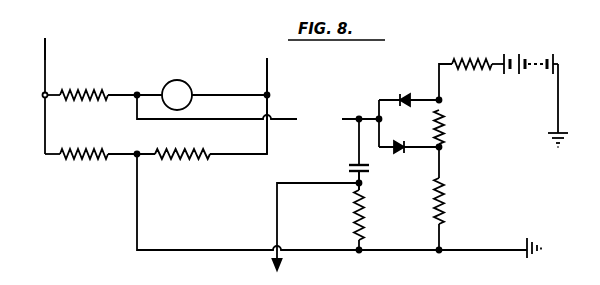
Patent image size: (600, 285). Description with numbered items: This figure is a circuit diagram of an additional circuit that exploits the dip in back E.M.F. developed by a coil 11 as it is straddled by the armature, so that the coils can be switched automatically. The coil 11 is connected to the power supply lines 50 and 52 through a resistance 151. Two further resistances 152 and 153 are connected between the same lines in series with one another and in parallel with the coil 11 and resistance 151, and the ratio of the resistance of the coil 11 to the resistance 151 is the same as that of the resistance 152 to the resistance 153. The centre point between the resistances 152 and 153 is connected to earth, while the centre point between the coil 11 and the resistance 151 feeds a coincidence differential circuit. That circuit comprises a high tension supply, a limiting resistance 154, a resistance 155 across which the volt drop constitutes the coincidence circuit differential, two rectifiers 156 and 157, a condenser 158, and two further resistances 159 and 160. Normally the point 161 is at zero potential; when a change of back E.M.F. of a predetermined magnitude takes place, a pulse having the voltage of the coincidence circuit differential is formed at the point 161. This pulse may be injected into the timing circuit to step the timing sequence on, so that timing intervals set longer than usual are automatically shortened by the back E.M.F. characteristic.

The power supply line 52 is at (45, 45).
The resistance 151 is at (103, 90).
The coil 11 is at (181, 78).
The power supply line 50 is at (267, 58).
The resistance 152 is at (83, 158).
The resistance 153 is at (163, 158).
The limiting resistance 154 is at (470, 60).
The resistance 155 is at (444, 124).
The rectifier 156 is at (410, 87).
The rectifier 157 is at (400, 153).
The condenser 158 is at (352, 166).
The resistance 159 is at (364, 221).
The resistance 160 is at (444, 203).
The point 161 is at (362, 187).